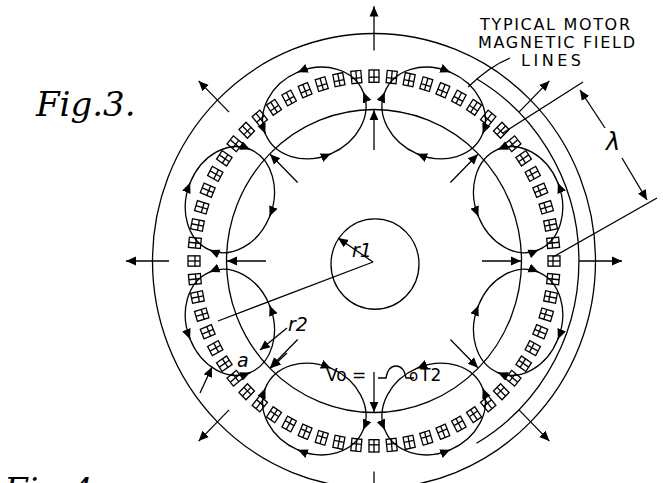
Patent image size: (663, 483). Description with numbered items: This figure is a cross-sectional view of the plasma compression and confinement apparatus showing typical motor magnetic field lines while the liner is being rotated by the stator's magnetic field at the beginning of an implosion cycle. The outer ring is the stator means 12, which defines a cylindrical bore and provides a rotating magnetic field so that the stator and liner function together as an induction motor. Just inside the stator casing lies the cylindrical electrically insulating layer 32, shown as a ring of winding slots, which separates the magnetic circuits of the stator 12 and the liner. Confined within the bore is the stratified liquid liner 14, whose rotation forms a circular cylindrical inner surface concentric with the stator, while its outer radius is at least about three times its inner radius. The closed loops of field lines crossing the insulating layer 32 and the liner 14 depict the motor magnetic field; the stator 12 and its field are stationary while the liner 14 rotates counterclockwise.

The stator means 12 is at (294, 56).
The electrically insulating layer 32 is at (240, 129).
The stratified liquid liner 14 is at (245, 307).